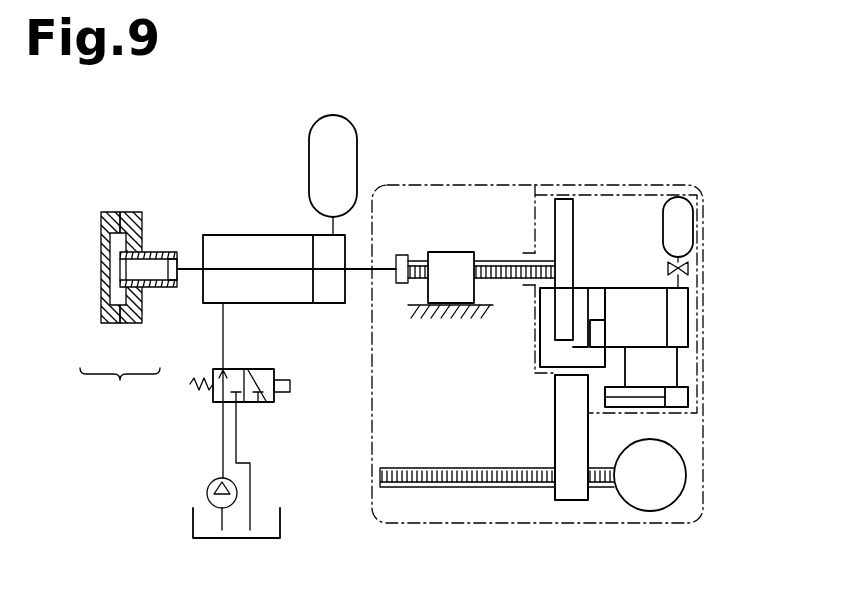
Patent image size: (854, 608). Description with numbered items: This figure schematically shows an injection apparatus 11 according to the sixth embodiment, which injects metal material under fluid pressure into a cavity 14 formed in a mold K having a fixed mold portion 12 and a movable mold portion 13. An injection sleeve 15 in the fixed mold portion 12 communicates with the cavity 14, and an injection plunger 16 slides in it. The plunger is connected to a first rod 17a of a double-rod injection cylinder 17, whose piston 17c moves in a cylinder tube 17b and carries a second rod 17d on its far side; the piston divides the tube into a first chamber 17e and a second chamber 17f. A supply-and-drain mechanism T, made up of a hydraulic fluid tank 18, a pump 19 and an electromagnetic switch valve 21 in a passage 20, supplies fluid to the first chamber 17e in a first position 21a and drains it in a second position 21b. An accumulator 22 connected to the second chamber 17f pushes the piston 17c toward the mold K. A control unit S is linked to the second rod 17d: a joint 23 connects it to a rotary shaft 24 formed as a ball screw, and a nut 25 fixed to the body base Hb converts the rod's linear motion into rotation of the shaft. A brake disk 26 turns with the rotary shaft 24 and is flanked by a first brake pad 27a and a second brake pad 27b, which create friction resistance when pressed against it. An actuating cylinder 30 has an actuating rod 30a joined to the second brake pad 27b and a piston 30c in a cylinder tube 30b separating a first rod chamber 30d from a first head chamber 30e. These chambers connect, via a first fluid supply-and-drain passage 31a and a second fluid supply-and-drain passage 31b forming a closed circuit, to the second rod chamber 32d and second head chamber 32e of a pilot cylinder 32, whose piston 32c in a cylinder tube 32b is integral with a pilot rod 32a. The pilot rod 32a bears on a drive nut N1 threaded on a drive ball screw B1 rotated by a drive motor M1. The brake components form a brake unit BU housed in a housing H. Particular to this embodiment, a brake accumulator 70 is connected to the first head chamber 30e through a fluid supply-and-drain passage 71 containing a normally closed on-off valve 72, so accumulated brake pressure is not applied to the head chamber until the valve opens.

The injection apparatus 11 is at (400, 105).
The fixed mold portion 12 is at (136, 324).
The movable mold portion 13 is at (117, 324).
The cavity 14 is at (112, 262).
The injection sleeve 15 is at (150, 250).
The injection plunger 16 is at (178, 258).
The injection cylinder 17 is at (272, 235).
The first rod 17a is at (190, 274).
The cylinder tube 17b is at (240, 303).
The piston 17c is at (312, 288).
The second rod 17d is at (357, 286).
The first chamber 17e is at (222, 242).
The second chamber 17f is at (323, 293).
The hydraulic fluid tank 18 is at (283, 523).
The pump 19 is at (207, 488).
The passage 20 is at (223, 428).
The electromagnetic switch valve 21 is at (212, 404).
The first position 21a is at (218, 368).
The second position 21b is at (275, 400).
The accumulator 22 is at (350, 117).
The joint 23 is at (401, 284).
The rotary shaft 24 is at (494, 260).
The nut 25 is at (450, 252).
The brake disk 26 is at (573, 207).
The first brake pad 27a is at (540, 337).
The second brake pad 27b is at (574, 343).
The actuating cylinder 30 is at (689, 290).
The actuating rod 30a is at (600, 319).
The cylinder tube 30b is at (689, 300).
The piston 30c is at (663, 290).
The first rod chamber 30d is at (627, 290).
The first head chamber 30e is at (689, 338).
The first fluid supply-and-drain passage 31a is at (652, 374).
The second fluid supply-and-drain passage 31b is at (677, 368).
The pilot cylinder 32 is at (689, 392).
The pilot rod 32a is at (605, 392).
The cylinder tube 32b is at (600, 403).
The piston 32c is at (688, 408).
The second rod chamber 32d is at (617, 405).
The second head chamber 32e is at (689, 405).
The brake accumulator 70 is at (692, 230).
The fluid supply-and-drain passage 71 is at (680, 258).
The on-off valve 72 is at (688, 268).
The brake unit BU is at (694, 213).
The housing H is at (470, 185).
The control unit S is at (713, 174).
The body base Hb is at (420, 306).
The drive ball screw B1 is at (437, 484).
The drive nut N1 is at (571, 500).
The drive motor M1 is at (650, 510).
The mold K is at (120, 386).
The supply-and-drain mechanism T is at (265, 440).